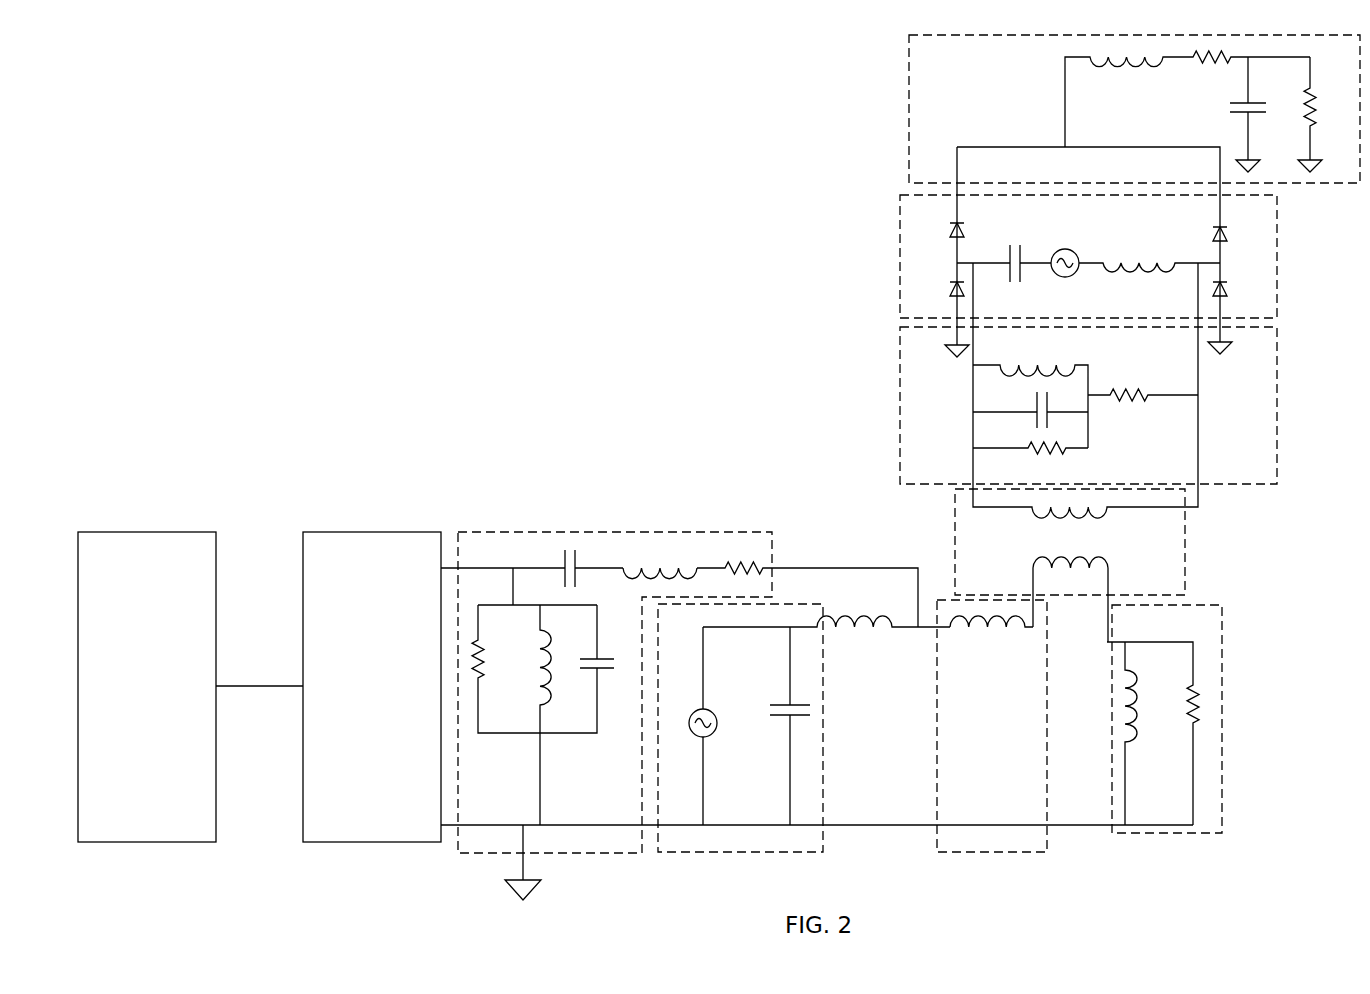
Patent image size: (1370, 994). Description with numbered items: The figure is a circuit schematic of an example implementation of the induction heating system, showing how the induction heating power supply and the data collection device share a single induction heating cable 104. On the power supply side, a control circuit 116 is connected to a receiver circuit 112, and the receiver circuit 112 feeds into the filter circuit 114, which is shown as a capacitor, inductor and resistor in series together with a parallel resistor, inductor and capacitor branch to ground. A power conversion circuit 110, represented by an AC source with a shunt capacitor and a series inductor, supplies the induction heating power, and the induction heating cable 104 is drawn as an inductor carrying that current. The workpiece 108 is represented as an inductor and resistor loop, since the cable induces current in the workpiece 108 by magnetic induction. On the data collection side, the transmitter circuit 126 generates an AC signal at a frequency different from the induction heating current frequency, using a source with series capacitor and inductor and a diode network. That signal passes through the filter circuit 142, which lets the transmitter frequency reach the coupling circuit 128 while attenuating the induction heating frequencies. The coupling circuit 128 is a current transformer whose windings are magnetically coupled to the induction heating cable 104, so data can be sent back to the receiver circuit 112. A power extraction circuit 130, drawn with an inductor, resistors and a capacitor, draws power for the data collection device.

The induction heating cable 104 is at (972, 853).
The workpiece 108 is at (1153, 833).
The power conversion circuit 110 is at (748, 853).
The receiver circuit 112 is at (372, 687).
The filter circuit 114 is at (597, 532).
The control circuit 116 is at (147, 687).
The transmitter circuit 126 is at (900, 200).
The coupling circuit 128 is at (955, 530).
The power extraction circuit 130 is at (909, 36).
The filter circuit 142 is at (900, 365).